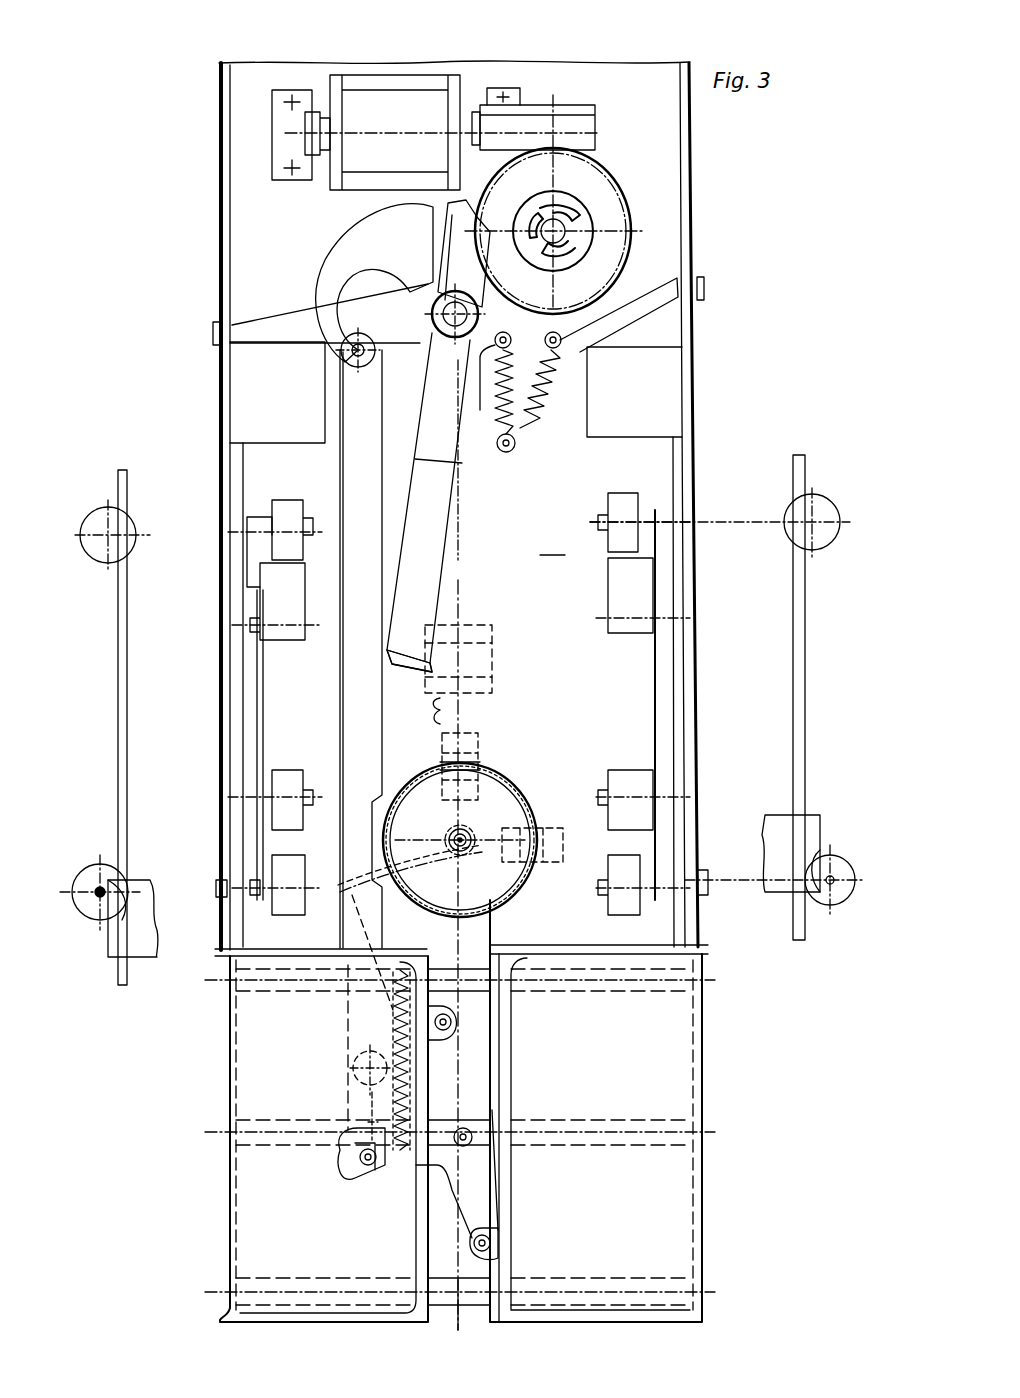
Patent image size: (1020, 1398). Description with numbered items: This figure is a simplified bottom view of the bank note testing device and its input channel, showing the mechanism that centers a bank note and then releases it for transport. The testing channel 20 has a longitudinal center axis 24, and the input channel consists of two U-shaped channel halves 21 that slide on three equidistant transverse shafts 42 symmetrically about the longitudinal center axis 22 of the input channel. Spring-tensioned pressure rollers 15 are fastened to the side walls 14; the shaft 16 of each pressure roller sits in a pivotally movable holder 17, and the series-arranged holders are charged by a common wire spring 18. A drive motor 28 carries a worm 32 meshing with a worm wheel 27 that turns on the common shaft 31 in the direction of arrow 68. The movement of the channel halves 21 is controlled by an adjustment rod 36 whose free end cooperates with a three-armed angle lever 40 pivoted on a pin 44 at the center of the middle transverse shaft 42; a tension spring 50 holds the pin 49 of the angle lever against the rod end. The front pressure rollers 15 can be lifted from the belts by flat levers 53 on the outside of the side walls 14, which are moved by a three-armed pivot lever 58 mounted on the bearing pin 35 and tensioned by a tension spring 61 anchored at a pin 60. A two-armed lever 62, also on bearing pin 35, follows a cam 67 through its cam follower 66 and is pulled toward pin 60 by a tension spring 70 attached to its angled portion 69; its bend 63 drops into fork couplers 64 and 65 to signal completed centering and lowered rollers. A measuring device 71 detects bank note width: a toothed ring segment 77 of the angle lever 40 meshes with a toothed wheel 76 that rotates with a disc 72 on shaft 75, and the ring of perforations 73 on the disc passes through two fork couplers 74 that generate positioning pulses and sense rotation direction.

The side walls 14 is at (240, 430).
The pressure rollers 15 is at (100, 525).
The shaft 16 is at (105, 905).
The holder 17 is at (290, 632).
The wire spring 18 is at (263, 712).
The testing channel 20 is at (553, 543).
The channel halves 21 is at (255, 1075).
The longitudinal center axis 22 is at (462, 1308).
The longitudinal center axis 24 is at (462, 610).
The worm wheel 27 is at (620, 222).
The drive motor 28 is at (378, 100).
The common shaft 31 is at (572, 240).
The worm 32 is at (549, 128).
The bearing pin 35 is at (442, 330).
The adjustment rod 36 is at (353, 466).
The three-armed angle lever 40 is at (480, 1200).
The transverse shafts 42 is at (680, 992).
The pin 44 is at (478, 1128).
The pin 49 is at (360, 1170).
The tension spring 50 is at (395, 1018).
The flat lever 53 is at (128, 687).
The three-armed pivot lever 58 is at (272, 318).
The pin 60 is at (512, 450).
The tension spring 61 is at (538, 388).
The two-armed lever 62 is at (430, 575).
The bend 63 is at (408, 665).
The fork coupler 64 is at (441, 716).
The fork coupler 65 is at (492, 685).
The cam follower 66 is at (440, 220).
The cam 67 is at (590, 212).
The arrow 68 is at (648, 152).
The angled portion 69 is at (478, 360).
The tension spring 70 is at (482, 450).
The measuring device 71 is at (526, 758).
The disc 72 is at (497, 888).
The ring of perforations 73 is at (500, 828).
The fork couplers 74 is at (465, 740).
The shaft 75 is at (468, 832).
The toothed wheel 76 is at (448, 830).
The toothed ring segment 77 is at (350, 880).